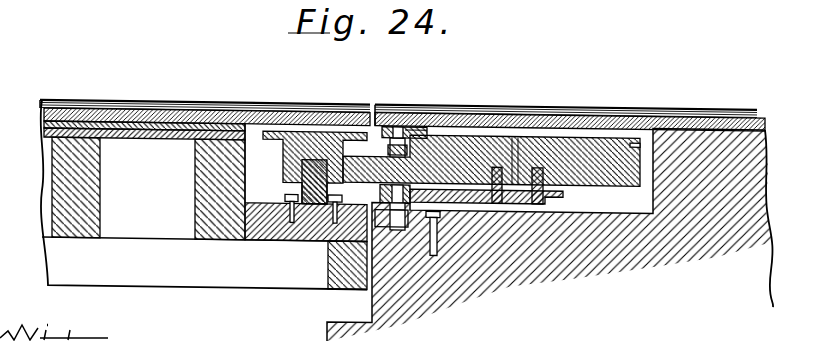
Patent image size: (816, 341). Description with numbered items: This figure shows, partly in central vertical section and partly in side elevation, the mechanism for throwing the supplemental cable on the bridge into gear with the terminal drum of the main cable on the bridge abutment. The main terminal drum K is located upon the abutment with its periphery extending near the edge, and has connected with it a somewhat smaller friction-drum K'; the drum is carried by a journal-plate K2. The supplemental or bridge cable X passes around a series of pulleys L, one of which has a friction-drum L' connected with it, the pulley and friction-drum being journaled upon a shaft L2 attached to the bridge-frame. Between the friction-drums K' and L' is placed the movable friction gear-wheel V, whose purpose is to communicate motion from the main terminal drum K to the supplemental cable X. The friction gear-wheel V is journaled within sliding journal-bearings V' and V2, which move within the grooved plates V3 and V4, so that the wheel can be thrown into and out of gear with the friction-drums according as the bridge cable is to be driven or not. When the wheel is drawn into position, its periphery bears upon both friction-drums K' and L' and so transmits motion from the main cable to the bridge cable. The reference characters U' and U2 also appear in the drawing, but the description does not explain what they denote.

The supplemental or bridge cable X is at (243, 140).
The pulley L is at (311, 168).
The friction-drum L' is at (291, 181).
The shaft L2 is at (298, 223).
The bolt U' is at (322, 235).
The main terminal drum K is at (611, 115).
The friction-drum K' is at (491, 169).
The journal-plate K2 is at (563, 188).
The friction gear-wheel V is at (380, 183).
The sliding journal-bearing V' is at (424, 108).
The grooved plate V3 is at (390, 122).
The sliding journal-bearing V2 is at (393, 218).
The grooved plate V4 is at (381, 226).
The base bolt U2 is at (432, 227).